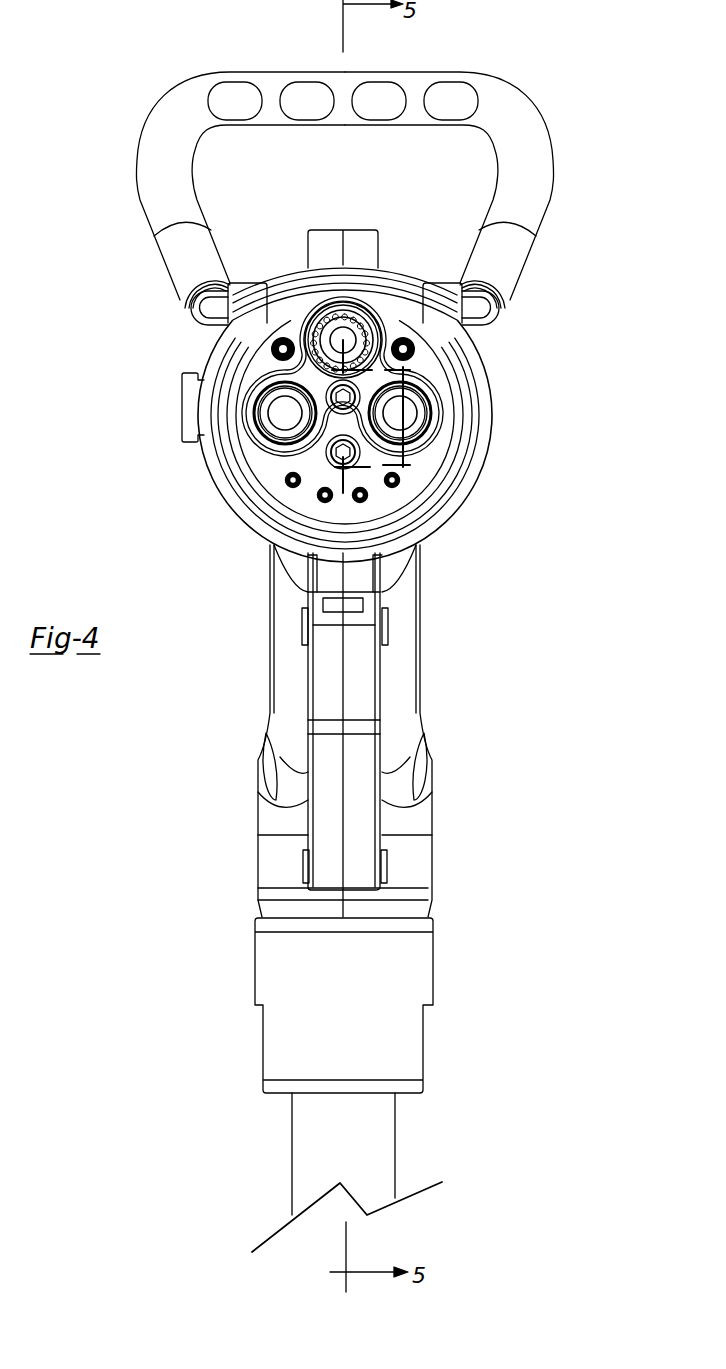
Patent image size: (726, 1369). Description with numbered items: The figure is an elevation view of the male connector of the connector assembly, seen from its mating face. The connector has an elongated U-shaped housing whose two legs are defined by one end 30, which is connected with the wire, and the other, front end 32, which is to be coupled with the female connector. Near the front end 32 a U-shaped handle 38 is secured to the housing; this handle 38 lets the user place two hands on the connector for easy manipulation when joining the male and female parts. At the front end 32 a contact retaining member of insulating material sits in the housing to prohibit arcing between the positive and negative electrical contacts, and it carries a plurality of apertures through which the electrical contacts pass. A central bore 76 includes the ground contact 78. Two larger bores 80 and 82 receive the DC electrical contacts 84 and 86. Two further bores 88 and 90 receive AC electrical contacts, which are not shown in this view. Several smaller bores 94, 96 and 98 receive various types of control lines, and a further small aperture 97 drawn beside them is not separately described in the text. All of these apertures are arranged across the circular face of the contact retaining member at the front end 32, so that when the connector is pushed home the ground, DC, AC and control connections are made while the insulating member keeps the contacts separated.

The end 30 is at (427, 910).
The end 32 is at (485, 434).
The handle 38 is at (455, 72).
The bore 76 is at (350, 318).
The ground contact 78 is at (320, 320).
The bore 80 is at (428, 413).
The bore 82 is at (258, 425).
The DC electrical contact 84 is at (413, 402).
The DC electrical contact 86 is at (270, 453).
The bore 88 is at (413, 347).
The bore 90 is at (272, 355).
The bore 94 is at (366, 498).
The bore 96 is at (322, 500).
The electrical contact 97 is at (398, 483).
The bore 98 is at (288, 484).